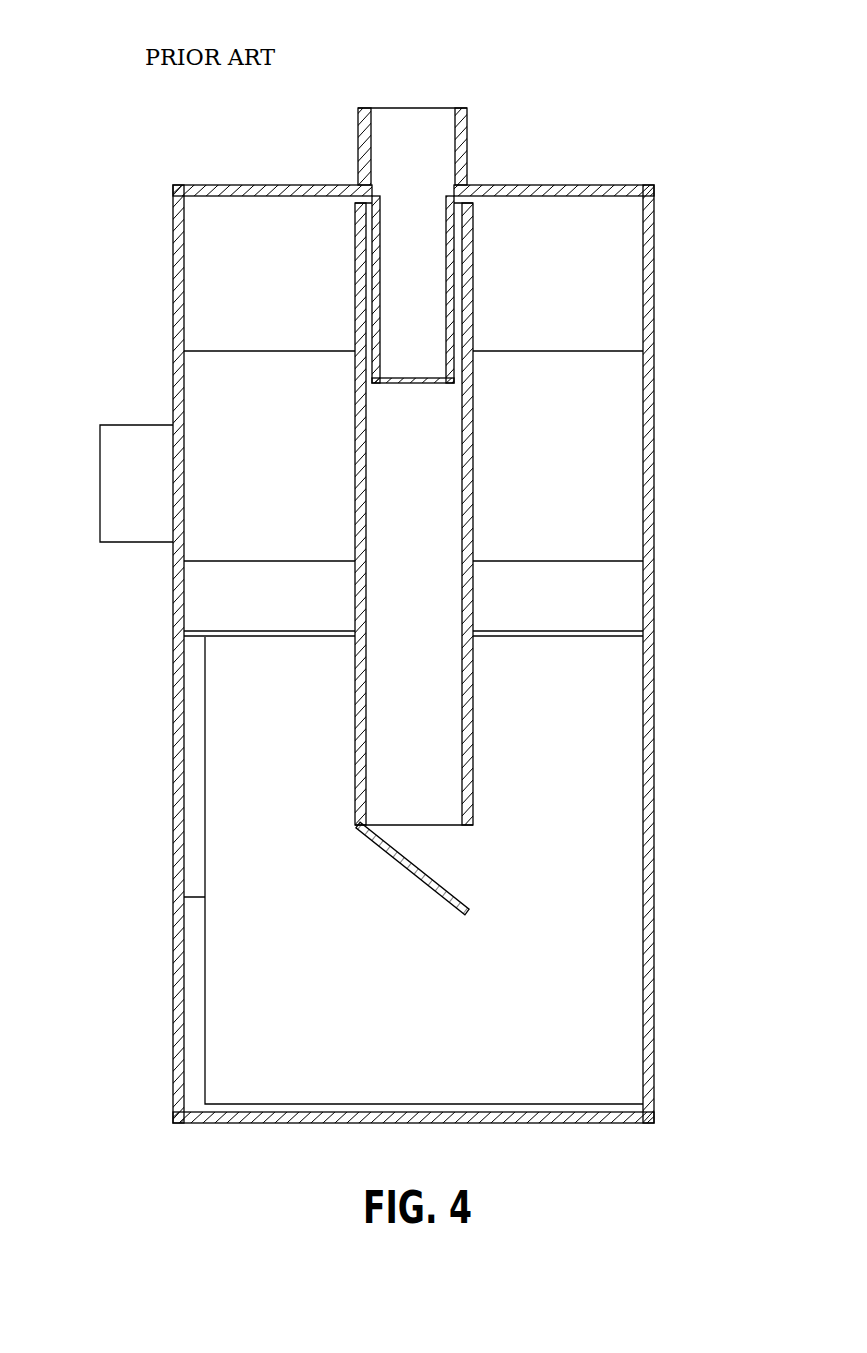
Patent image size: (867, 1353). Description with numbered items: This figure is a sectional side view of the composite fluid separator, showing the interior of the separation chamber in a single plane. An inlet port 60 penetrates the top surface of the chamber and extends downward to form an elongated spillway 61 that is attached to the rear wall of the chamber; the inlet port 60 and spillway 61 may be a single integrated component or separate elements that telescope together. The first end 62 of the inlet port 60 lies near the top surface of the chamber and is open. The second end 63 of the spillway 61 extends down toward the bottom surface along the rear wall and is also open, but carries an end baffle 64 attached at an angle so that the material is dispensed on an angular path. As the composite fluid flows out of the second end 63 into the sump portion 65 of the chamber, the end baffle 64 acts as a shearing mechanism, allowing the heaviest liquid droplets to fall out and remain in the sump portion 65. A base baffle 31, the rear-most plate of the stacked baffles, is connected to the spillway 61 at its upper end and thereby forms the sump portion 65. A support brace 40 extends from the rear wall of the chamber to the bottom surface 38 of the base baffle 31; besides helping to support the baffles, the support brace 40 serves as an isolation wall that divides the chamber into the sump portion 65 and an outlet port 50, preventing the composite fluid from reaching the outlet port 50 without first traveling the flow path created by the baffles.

The base baffle 31 is at (218, 959).
The bottom surface 38 is at (617, 412).
The support brace 40 is at (591, 588).
The outlet port 50 is at (122, 497).
The inlet port 60 is at (462, 143).
The spillway 61 is at (440, 509).
The first end 62 is at (430, 108).
The second end 63 is at (440, 826).
The end baffle 64 is at (395, 862).
The sump portion 65 is at (613, 830).